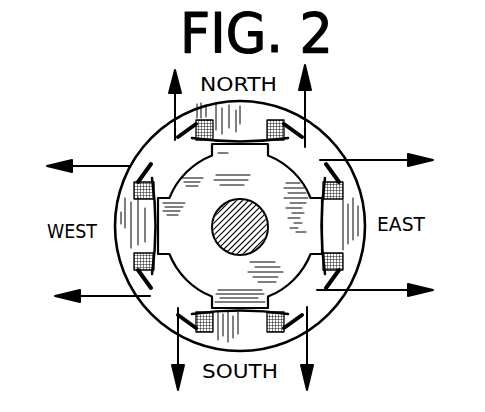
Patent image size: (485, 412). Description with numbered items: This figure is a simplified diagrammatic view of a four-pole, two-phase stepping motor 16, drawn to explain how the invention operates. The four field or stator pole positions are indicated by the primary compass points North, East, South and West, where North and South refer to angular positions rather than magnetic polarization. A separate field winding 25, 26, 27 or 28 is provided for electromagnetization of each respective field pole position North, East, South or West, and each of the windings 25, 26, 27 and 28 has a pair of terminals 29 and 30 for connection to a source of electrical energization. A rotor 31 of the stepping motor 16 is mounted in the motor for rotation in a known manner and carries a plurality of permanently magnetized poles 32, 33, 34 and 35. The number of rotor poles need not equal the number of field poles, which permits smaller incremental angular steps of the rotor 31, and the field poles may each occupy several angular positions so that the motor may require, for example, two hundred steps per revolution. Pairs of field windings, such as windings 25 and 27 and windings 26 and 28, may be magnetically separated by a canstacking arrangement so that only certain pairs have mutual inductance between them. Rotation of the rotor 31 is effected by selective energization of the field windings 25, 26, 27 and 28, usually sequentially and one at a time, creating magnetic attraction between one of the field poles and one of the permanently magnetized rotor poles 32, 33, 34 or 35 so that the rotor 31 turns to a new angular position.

The stepping motor 16 is at (101, 134).
The field winding 25 is at (285, 106).
The field winding 26 is at (340, 262).
The field winding 27 is at (308, 340).
The field winding 28 is at (133, 266).
The terminal 29 is at (173, 103).
The terminal 30 is at (312, 128).
The rotor 31 is at (252, 188).
The permanently magnetized pole 32 is at (210, 148).
The permanently magnetized pole 33 is at (310, 200).
The permanently magnetized pole 34 is at (278, 290).
The permanently magnetized pole 35 is at (172, 247).